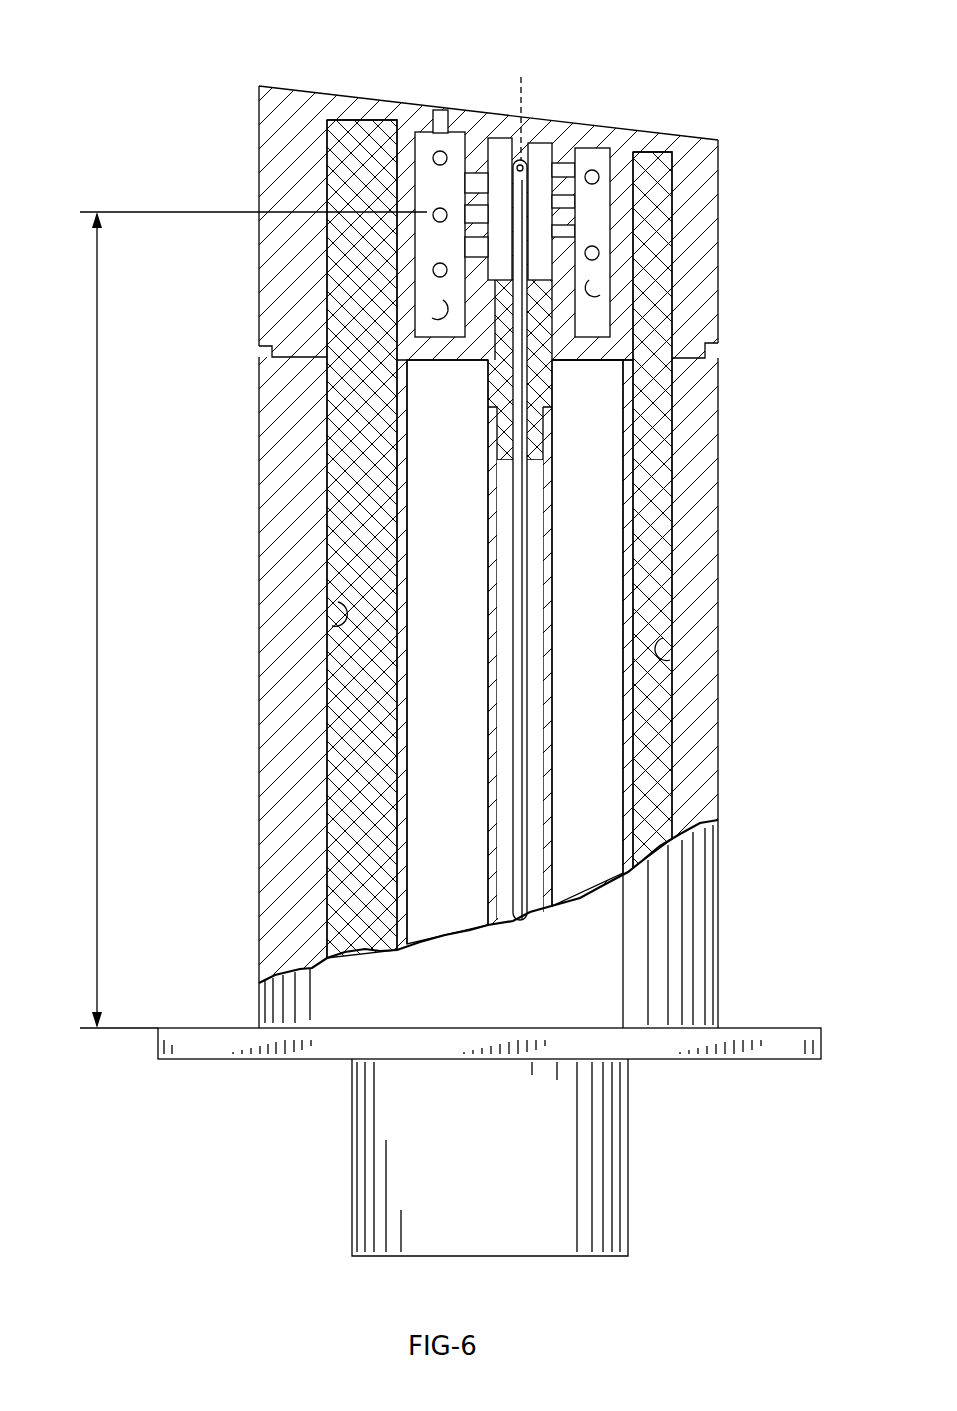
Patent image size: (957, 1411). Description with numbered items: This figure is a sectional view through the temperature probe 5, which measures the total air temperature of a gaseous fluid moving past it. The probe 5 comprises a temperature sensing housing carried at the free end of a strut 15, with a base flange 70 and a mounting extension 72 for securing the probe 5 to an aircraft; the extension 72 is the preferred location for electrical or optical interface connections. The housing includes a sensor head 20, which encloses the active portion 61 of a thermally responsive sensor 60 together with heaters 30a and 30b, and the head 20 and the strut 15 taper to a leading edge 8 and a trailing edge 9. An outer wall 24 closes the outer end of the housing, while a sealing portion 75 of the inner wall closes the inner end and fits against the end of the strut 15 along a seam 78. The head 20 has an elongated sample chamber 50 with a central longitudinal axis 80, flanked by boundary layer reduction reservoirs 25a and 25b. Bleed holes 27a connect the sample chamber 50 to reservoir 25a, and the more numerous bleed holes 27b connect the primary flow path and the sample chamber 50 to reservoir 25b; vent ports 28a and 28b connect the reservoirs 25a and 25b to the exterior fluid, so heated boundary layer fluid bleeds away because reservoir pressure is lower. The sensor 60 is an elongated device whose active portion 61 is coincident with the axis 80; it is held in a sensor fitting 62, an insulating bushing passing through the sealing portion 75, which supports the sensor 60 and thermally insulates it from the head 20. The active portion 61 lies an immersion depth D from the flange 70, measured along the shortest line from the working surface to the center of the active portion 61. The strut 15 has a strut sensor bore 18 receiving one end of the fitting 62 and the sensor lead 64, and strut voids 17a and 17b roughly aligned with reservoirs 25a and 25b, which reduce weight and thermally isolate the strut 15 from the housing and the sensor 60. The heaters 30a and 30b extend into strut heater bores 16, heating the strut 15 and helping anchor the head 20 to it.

The temperature probe 5 is at (196, 75).
The outer side wall 24 is at (338, 94).
The boundary layer vent ports 28b is at (441, 110).
The boundary layer bleed holes 27b is at (477, 163).
The active portion of thermally responsive sensor 61 is at (520, 165).
The central longitudinal axis 80 is at (521, 86).
The sample chamber 50 is at (533, 153).
The boundary layer bleed holes 27a is at (562, 160).
The heater 30b is at (338, 147).
The heater 30a is at (657, 190).
The boundary layer vent ports 28a is at (599, 255).
The boundary layer reduction reservoir 25a is at (600, 290).
The boundary layer reduction reservoir 25b is at (433, 273).
The sensor head 20 is at (250, 250).
The thermally responsive sensor 60 is at (530, 336).
The seam 78 is at (278, 360).
The sealing portion 75 is at (600, 357).
The sensor fitting 62 is at (546, 390).
The strut 15 is at (250, 468).
The leading edge 8 is at (262, 531).
The trailing edge 9 is at (720, 548).
The strut heater bores 16 is at (338, 602).
The strut void 17b is at (436, 722).
The strut void 17a is at (596, 725).
The strut sensor bore 18 is at (536, 608).
The sensor lead 64 is at (523, 790).
The base flange 70 is at (790, 1028).
The mounting extension 72 is at (598, 1174).
The immersion depth D is at (253, 620).